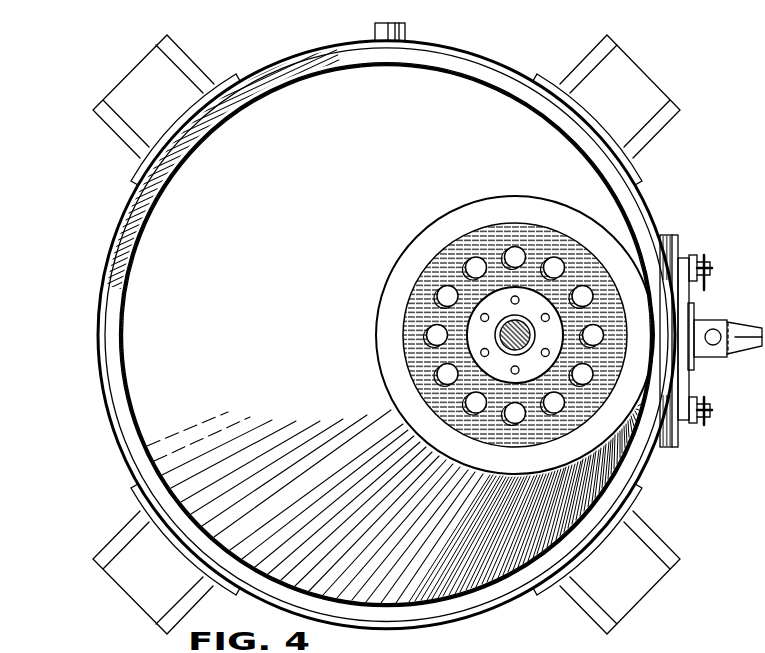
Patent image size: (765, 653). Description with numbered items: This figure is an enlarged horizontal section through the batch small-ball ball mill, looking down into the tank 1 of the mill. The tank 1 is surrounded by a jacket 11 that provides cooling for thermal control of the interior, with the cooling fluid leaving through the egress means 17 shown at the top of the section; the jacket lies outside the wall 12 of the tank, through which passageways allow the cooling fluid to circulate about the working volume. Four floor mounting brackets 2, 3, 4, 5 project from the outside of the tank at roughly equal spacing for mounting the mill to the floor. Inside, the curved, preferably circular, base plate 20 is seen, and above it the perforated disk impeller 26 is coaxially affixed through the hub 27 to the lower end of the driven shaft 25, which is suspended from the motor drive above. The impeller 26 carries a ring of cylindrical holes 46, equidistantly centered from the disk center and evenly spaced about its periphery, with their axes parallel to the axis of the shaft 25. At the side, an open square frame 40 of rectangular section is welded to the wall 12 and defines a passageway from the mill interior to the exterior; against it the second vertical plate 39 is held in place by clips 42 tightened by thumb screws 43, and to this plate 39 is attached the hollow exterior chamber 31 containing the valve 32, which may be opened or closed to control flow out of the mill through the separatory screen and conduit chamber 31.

The jacketed tank 1 is at (356, 335).
The floor mounting bracket 2 is at (108, 542).
The floor mounting bracket 3 is at (658, 552).
The floor mounting bracket 4 is at (640, 95).
The floor mounting bracket 5 is at (196, 70).
The jacket 11 is at (98, 313).
The wall 12 is at (122, 312).
The egress means 17 is at (405, 33).
The base plate 20 is at (522, 212).
The driven shaft 25 is at (523, 353).
The perforated disk impeller 26 is at (392, 323).
The hub 27 is at (501, 323).
The hollow exterior chamber 31 is at (716, 360).
The valve 32 is at (760, 352).
The second vertical plate 39 is at (697, 292).
The open square frame 40 is at (671, 445).
The clip 42 is at (693, 248).
The thumb screw 43 is at (707, 258).
The hole 46 is at (557, 259).